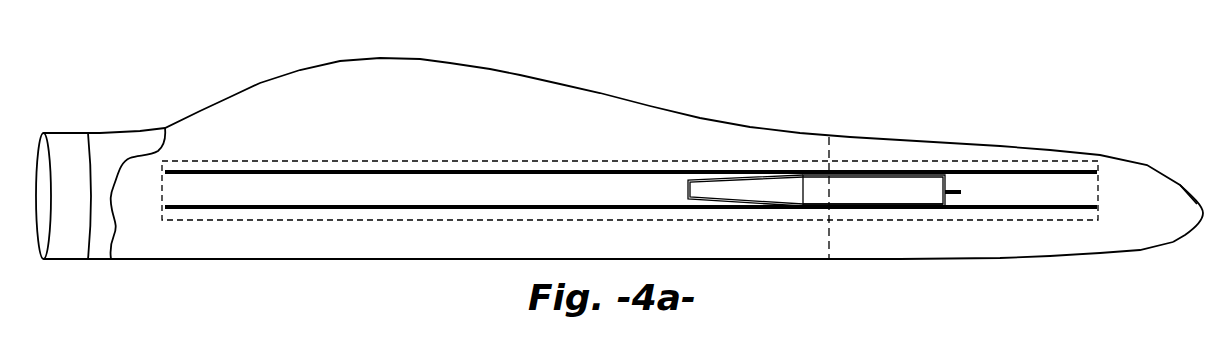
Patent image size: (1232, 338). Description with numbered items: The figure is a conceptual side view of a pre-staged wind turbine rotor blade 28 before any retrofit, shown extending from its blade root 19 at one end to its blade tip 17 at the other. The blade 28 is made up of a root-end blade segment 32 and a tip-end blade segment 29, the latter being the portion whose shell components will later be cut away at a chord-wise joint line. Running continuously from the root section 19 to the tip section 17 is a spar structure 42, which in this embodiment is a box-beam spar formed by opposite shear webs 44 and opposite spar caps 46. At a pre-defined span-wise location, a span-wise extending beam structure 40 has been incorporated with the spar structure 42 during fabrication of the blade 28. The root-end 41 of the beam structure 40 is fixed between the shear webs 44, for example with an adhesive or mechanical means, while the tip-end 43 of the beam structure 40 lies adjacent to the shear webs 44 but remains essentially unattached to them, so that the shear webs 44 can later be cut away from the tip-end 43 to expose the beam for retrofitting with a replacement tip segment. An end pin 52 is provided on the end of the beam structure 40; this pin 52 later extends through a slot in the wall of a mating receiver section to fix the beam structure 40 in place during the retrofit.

The rotor blade 28 is at (620, 173).
The blade root 19 is at (112, 146).
The blade tip 17 is at (1167, 195).
The root-end blade segment 32 is at (260, 82).
The tip-end blade segment 29 is at (1027, 256).
The spar caps 46 is at (293, 160).
The shear webs 44 is at (380, 172).
The spar structure 42 is at (488, 158).
The beam structure 40 is at (815, 178).
The root-end of the beam structure 41 is at (720, 192).
The tip-end of the beam structure 43 is at (905, 188).
The end pin 52 is at (961, 192).